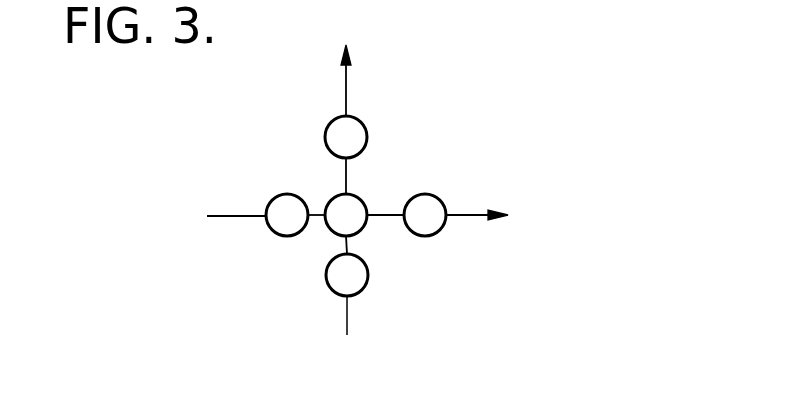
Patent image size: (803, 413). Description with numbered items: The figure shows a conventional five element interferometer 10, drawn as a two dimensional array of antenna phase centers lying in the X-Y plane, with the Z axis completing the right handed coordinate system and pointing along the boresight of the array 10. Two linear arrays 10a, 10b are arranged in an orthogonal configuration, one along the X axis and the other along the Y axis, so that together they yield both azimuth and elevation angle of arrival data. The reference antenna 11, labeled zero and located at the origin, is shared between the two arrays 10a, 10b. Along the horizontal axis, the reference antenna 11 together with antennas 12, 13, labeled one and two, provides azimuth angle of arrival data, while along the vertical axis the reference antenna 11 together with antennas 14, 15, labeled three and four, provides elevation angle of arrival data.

The five element interferometer 10 is at (536, 131).
The linear array 10a is at (252, 272).
The linear array 10b is at (316, 311).
The reference antenna 11 is at (366, 206).
The antenna 12 is at (274, 196).
The antenna 13 is at (440, 196).
The antenna 14 is at (368, 273).
The antenna 15 is at (364, 125).